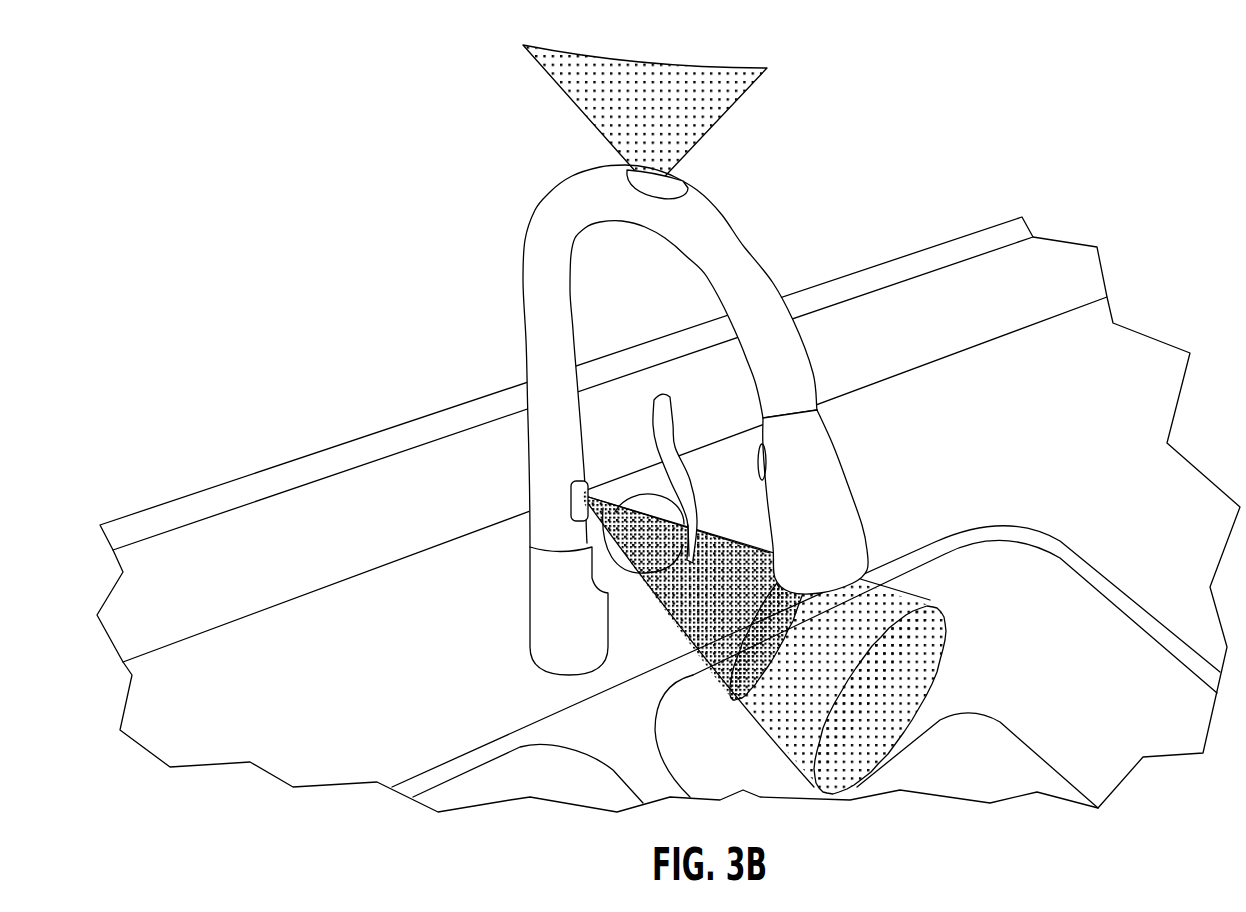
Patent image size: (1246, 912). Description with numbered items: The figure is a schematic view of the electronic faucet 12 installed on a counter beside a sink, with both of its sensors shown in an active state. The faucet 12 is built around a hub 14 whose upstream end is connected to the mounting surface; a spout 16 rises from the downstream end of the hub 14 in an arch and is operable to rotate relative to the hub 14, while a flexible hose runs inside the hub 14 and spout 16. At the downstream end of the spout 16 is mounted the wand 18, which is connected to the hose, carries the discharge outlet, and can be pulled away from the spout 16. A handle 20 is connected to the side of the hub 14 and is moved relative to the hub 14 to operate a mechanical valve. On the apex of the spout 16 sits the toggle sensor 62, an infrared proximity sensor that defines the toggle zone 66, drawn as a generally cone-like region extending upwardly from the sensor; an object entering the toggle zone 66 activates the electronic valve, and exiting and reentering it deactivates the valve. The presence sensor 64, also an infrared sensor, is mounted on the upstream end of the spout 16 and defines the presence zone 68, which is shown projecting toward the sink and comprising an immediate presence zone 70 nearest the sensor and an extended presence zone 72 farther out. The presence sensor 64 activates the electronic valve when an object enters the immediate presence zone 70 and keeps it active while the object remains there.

The electronic faucet 12 is at (710, 360).
The hub 14 is at (528, 603).
The spout 16 is at (522, 282).
The wand 18 is at (848, 485).
The handle 20 is at (675, 420).
The toggle sensor 62 is at (673, 187).
The presence sensor 64 is at (588, 480).
The toggle zone 66 is at (747, 90).
The presence zone 68 is at (747, 532).
The immediate presence zone 70 is at (637, 603).
The extended presence zone 72 is at (920, 602).